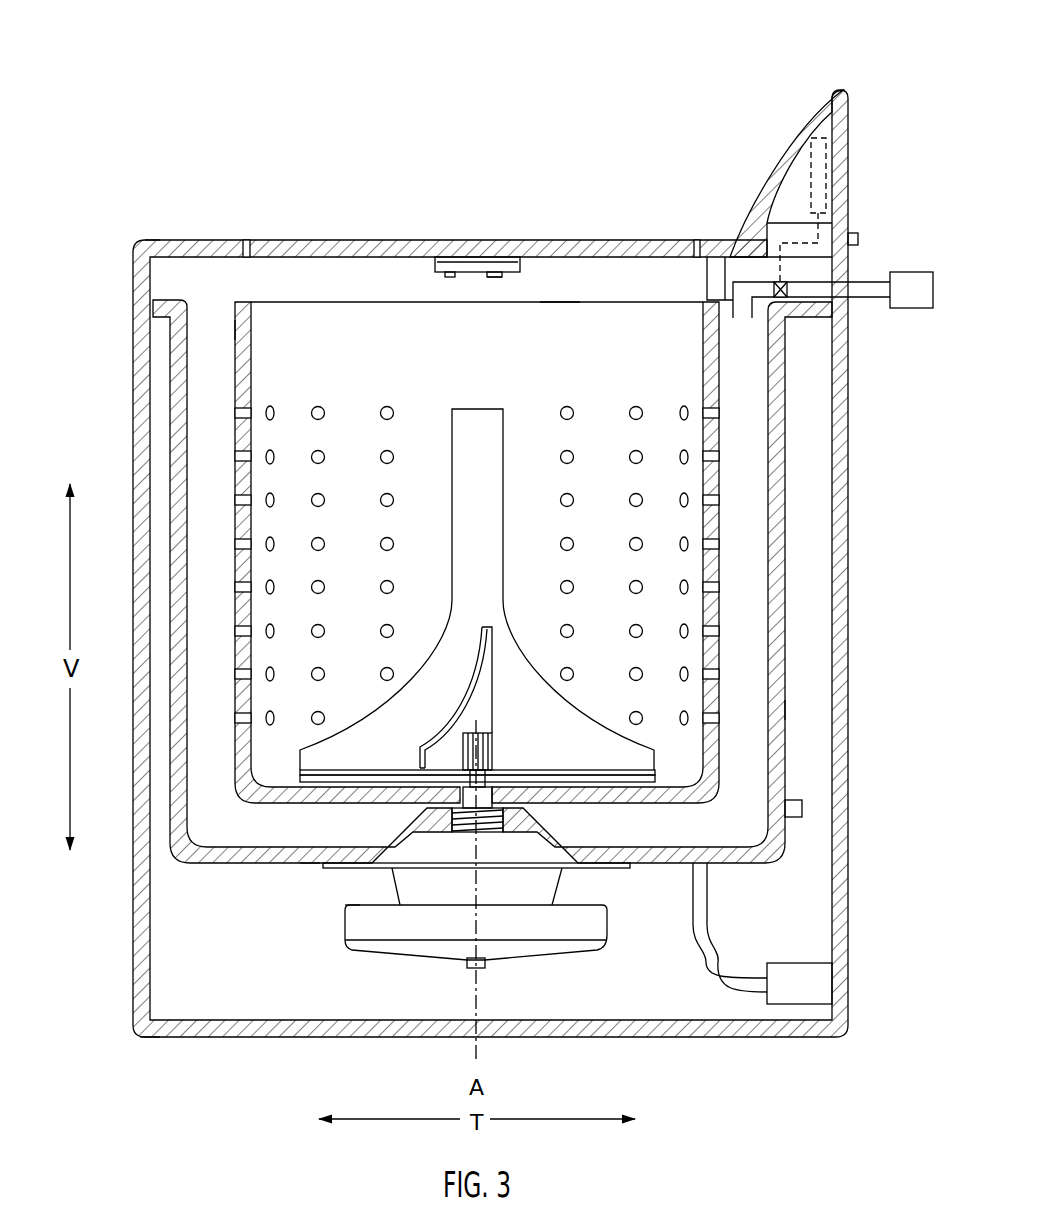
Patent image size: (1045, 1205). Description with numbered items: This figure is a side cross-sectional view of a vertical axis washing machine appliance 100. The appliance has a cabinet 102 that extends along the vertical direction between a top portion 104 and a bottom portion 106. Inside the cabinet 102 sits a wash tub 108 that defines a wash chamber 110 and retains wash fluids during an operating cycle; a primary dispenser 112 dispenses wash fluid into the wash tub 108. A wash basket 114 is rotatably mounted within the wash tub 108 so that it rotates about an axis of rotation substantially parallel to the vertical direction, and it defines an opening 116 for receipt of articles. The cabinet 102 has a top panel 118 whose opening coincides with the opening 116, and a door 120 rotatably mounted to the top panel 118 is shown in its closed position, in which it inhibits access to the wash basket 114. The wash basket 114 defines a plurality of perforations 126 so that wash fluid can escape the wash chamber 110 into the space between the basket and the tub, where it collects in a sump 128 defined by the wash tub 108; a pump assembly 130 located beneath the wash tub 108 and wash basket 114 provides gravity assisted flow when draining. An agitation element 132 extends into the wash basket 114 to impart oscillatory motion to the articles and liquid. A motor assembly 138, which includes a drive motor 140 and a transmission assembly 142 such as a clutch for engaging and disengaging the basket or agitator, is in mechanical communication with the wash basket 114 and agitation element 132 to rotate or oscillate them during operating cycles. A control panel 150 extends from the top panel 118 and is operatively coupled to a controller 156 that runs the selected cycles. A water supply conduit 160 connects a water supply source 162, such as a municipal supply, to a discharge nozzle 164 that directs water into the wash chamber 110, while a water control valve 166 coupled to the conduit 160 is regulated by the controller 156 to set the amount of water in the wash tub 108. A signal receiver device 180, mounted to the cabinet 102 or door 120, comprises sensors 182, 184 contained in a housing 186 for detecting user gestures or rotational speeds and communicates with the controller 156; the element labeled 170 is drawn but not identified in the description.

The washing machine appliance 100 is at (174, 120).
The cabinet 102 is at (143, 385).
The top portion 104 is at (126, 250).
The bottom portion 106 is at (112, 1034).
The wash tub 108 is at (777, 705).
The wash chamber 110 is at (210, 519).
The primary dispenser 112 is at (722, 277).
The wash basket 114 is at (235, 328).
The opening 116 is at (562, 300).
The top panel 118 is at (178, 240).
The door 120 is at (366, 240).
The perforations 126 is at (395, 407).
The sump 128 is at (302, 838).
The pump assembly 130 is at (745, 992).
The agitation element 132 is at (483, 417).
The motor assembly 138 is at (313, 911).
The drive motor 140 is at (598, 927).
The transmission assembly 142 is at (542, 870).
The control panel 150 is at (791, 141).
The controller 156 is at (823, 152).
The water supply conduit 160 is at (872, 300).
The water supply source 162 is at (911, 290).
The discharge nozzle 164 is at (743, 322).
The water control valve 166 is at (788, 290).
The sensor 170 is at (802, 808).
The signal receiver device 180 is at (471, 255).
The sensor 182 is at (505, 275).
The sensor 184 is at (494, 279).
The housing 186 is at (450, 278).